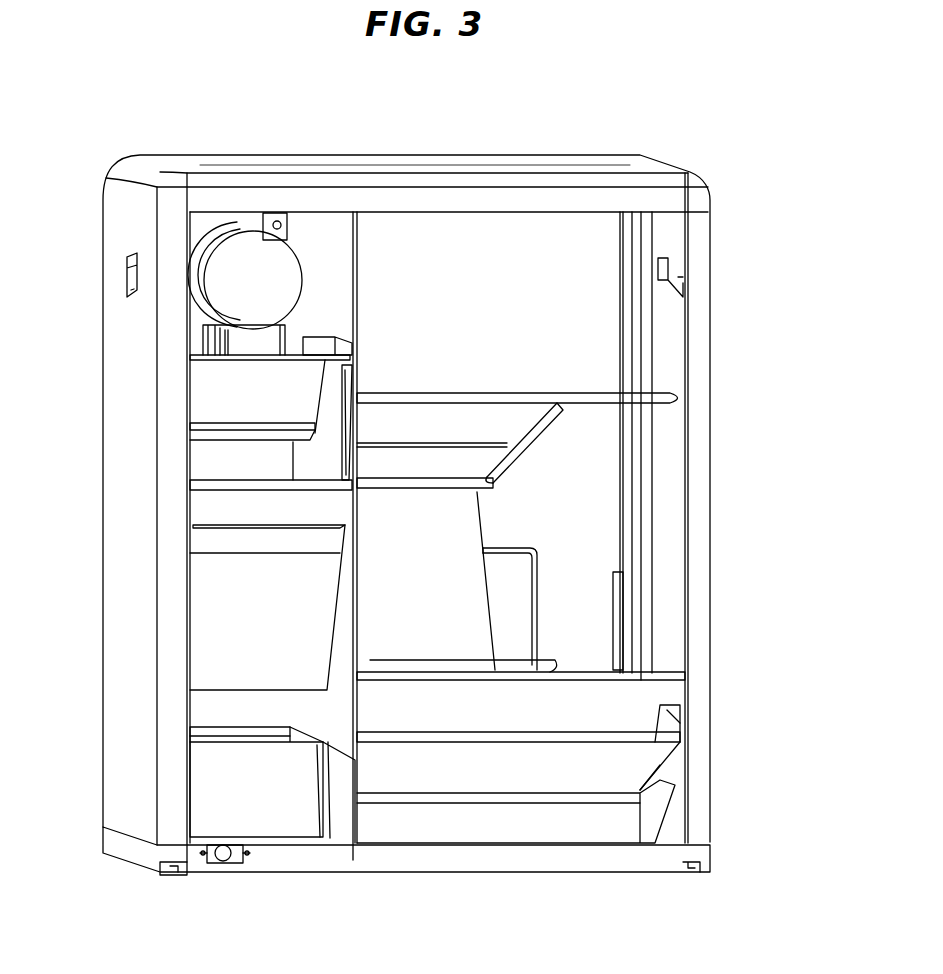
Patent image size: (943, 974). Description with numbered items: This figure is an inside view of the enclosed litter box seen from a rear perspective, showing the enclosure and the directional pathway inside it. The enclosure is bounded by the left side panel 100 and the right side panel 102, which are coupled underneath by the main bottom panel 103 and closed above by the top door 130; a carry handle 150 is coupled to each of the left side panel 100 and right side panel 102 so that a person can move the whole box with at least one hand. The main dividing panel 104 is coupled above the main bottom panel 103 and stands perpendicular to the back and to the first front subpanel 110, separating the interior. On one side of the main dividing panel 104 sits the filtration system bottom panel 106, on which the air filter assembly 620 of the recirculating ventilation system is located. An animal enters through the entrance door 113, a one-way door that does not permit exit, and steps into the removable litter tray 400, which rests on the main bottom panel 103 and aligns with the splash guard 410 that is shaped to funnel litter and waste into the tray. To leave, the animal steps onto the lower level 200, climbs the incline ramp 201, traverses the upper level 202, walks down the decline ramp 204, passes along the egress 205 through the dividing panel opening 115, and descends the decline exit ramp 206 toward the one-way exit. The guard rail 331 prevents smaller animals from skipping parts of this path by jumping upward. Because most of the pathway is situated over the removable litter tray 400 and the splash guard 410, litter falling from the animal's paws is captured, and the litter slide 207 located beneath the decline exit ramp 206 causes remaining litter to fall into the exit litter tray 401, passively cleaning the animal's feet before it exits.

The left side panel 100 is at (668, 332).
The right side panel 102 is at (118, 800).
The main bottom panel 103 is at (200, 838).
The main dividing panel 104 is at (333, 808).
The filtration system bottom panel 106 is at (233, 383).
The first front subpanel 110 is at (540, 305).
The entrance door 113 is at (497, 575).
The dividing panel opening 115 is at (347, 377).
The top door 130 is at (388, 185).
The carry handle 150 is at (125, 290).
The lower level 200 is at (580, 673).
The incline ramp 201 is at (457, 620).
The upper level 202 is at (690, 407).
The decline ramp 204 is at (553, 430).
The egress 205 is at (240, 488).
The decline exit ramp 206 is at (213, 540).
The litter slide/ramp 207 is at (215, 625).
The guard rail 331 is at (455, 462).
The removable litter tray 400 is at (625, 815).
The exit litter tray 401 is at (222, 783).
The splash guard 410 is at (668, 718).
The air filter assembly 620 is at (250, 285).